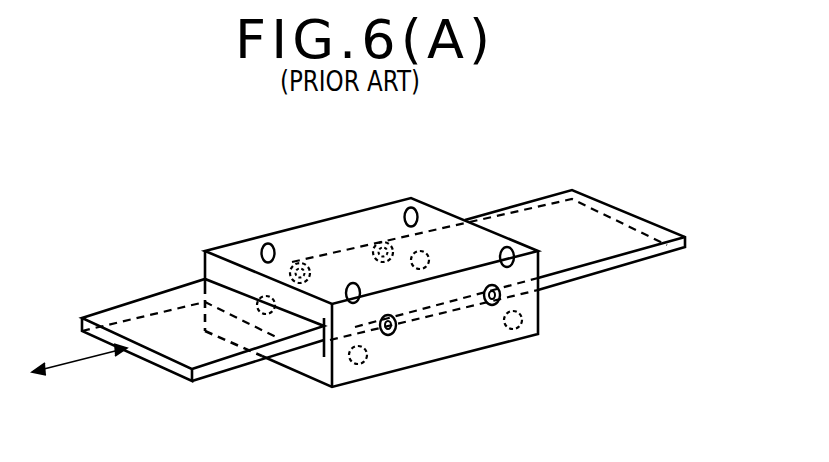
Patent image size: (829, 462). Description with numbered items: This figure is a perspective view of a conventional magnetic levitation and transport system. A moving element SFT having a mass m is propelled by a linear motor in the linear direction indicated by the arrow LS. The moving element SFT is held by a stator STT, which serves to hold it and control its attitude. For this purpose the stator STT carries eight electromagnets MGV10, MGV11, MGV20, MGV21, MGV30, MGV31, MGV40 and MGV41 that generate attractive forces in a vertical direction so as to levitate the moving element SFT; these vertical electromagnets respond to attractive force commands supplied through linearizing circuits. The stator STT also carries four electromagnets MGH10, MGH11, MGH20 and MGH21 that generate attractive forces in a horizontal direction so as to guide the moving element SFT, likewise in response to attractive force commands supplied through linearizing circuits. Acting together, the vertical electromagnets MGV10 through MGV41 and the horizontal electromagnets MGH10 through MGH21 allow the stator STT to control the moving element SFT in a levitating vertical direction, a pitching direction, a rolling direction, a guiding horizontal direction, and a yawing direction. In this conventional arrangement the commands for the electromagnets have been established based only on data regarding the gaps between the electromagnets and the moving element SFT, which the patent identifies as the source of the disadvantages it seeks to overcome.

The electromagnet MGV10 is at (262, 245).
The electromagnet MGV11 is at (210, 287).
The electromagnet MGV20 is at (353, 303).
The electromagnet MGV21 is at (362, 363).
The electromagnet MGV30 is at (411, 208).
The electromagnet MGV31 is at (424, 252).
The electromagnet MGV40 is at (511, 250).
The electromagnet MGV41 is at (522, 322).
The electromagnet MGH10 is at (395, 333).
The electromagnet MGH11 is at (296, 264).
The electromagnet MGH20 is at (494, 305).
The electromagnet MGH21 is at (378, 243).
The moving element SFT is at (687, 246).
The stator STT is at (297, 364).
The linear direction arrow LS is at (70, 363).